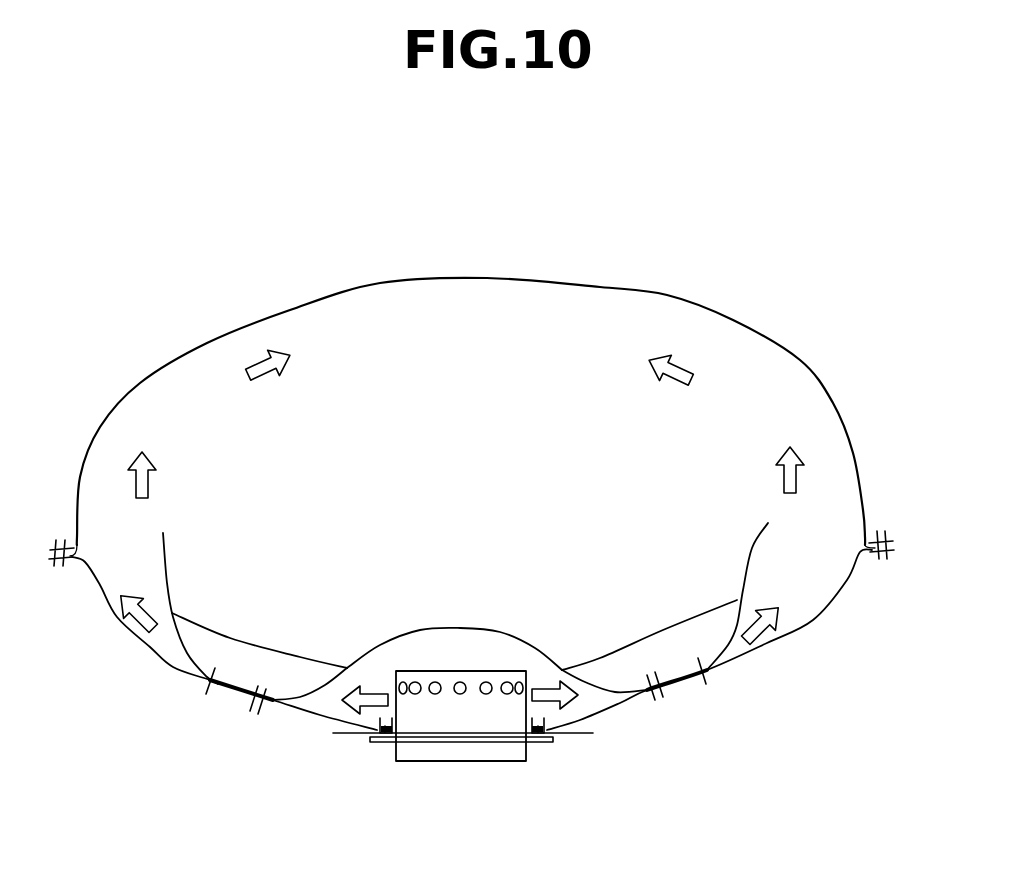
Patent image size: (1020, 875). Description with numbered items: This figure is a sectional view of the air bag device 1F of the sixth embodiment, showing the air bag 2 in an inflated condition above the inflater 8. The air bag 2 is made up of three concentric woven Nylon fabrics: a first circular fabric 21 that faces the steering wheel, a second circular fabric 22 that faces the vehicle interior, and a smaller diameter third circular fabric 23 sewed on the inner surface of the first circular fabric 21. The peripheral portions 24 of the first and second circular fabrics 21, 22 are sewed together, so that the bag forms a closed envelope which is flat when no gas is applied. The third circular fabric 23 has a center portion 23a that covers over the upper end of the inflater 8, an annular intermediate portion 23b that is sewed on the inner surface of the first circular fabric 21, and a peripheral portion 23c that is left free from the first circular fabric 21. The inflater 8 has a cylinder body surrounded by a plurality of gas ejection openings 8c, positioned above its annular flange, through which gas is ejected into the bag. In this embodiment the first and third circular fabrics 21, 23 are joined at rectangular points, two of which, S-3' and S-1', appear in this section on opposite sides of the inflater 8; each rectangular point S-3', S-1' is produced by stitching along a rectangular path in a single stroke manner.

The air bag device 1F is at (862, 209).
The air bag 2 is at (670, 295).
The second circular fabric 22 is at (808, 367).
The first circular fabric 21 is at (847, 580).
The peripheral portions 24 is at (873, 533).
The third circular fabric 23 is at (433, 627).
The center portion 23a is at (488, 628).
The annular intermediate portion 23b is at (270, 643).
The peripheral portion 23c is at (167, 550).
The inflater 8 is at (527, 748).
The gas ejection openings 8c is at (488, 681).
The rectangular point S-3' is at (230, 729).
The rectangular point S-1' is at (710, 720).